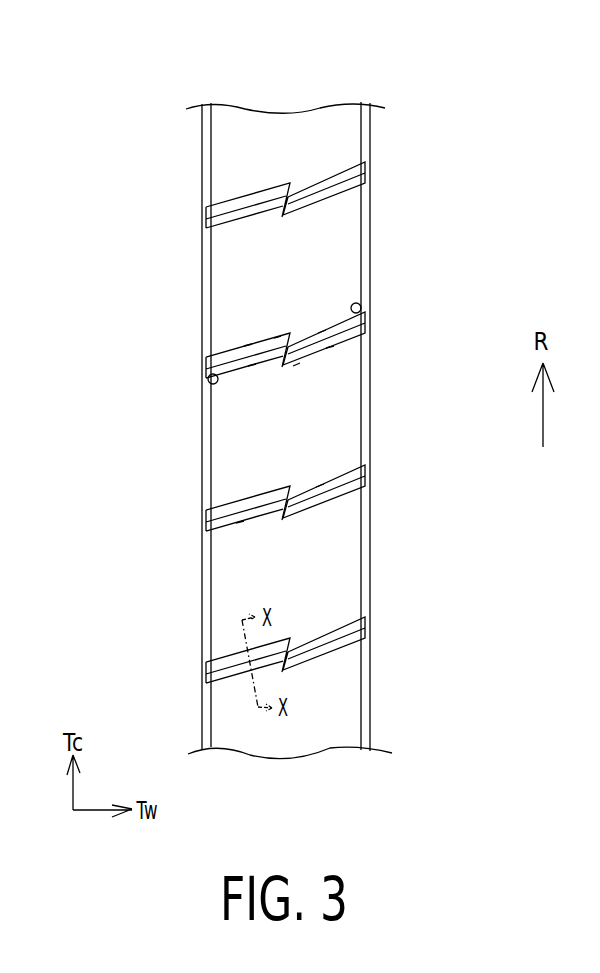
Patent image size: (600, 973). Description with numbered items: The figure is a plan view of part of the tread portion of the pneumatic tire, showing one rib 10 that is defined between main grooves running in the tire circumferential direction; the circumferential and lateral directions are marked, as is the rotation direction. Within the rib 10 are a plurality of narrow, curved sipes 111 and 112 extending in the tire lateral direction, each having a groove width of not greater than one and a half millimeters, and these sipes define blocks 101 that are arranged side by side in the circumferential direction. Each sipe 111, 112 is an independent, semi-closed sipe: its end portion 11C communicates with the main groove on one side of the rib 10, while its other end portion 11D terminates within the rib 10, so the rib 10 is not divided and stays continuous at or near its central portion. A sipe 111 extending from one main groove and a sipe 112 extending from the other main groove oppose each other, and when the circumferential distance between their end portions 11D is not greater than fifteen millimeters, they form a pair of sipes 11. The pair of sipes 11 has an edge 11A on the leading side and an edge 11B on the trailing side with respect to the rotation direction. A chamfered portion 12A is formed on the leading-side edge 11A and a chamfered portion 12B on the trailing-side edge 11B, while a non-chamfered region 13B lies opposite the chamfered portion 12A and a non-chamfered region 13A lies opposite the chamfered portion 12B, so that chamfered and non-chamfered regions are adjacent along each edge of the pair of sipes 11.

The rib 10 is at (376, 80).
The block 101 is at (252, 260).
The pair of sipes 11 is at (456, 138).
The sipe 111 is at (243, 213).
The sipe 112 is at (332, 181).
The edge on the leading side 11A is at (247, 353).
The edge on the trailing side 11B is at (252, 371).
The end portion 11C is at (208, 383).
The end portion 11D is at (277, 349).
The chamfered portion on the leading side 12A is at (245, 502).
The chamfered portion on the trailing side 12B is at (318, 508).
The non-chamfered region on the leading side 13A is at (323, 475).
The non-chamfered region on the trailing side 13B is at (240, 520).